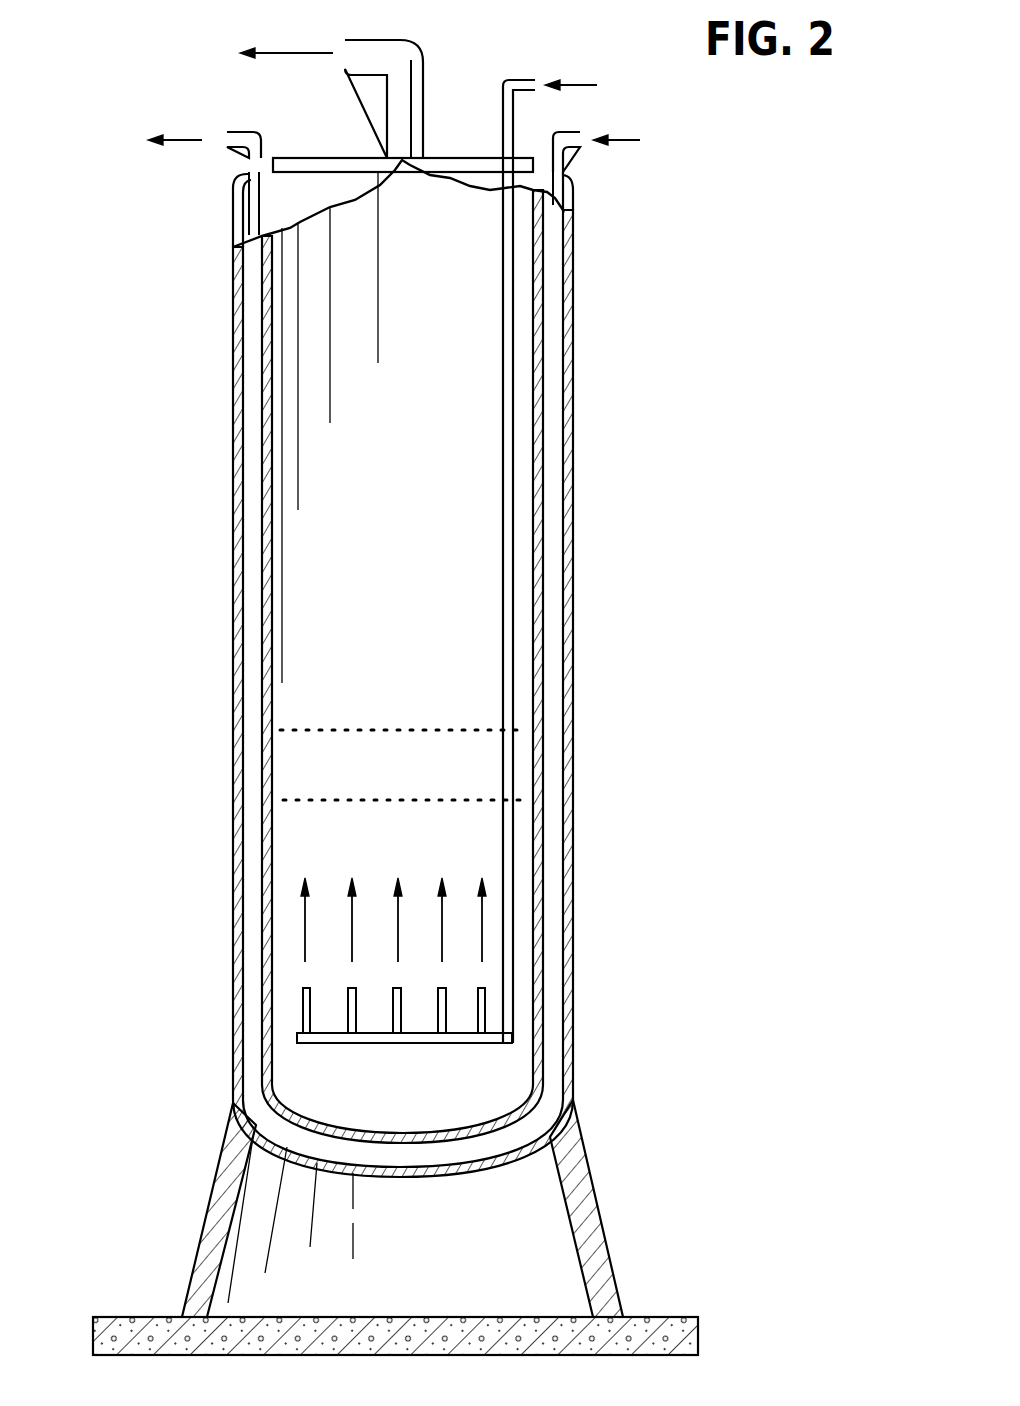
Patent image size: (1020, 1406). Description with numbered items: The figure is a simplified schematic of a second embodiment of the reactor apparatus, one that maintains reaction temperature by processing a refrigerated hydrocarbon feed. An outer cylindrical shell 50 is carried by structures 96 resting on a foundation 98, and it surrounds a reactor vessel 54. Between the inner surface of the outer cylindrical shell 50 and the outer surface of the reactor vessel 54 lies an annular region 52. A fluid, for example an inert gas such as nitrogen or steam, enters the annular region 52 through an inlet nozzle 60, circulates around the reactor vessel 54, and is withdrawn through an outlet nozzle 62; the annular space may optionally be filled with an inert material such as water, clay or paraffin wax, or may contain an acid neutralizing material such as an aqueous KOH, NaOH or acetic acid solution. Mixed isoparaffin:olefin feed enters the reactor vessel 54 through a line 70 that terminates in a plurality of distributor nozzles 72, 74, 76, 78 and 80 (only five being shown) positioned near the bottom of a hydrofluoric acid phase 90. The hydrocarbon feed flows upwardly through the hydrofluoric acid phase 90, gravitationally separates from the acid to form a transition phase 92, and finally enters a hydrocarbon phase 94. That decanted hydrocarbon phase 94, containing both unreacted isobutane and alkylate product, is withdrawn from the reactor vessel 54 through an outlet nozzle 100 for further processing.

The outer cylindrical shell 50 is at (230, 575).
The annular region 52 is at (248, 670).
The reactor vessel 54 is at (262, 770).
The inlet nozzle 60 is at (563, 133).
The outlet nozzle 62 is at (245, 132).
The line 70 is at (520, 80).
The distributor nozzle 72 is at (303, 1016).
The distributor nozzle 74 is at (348, 1016).
The distributor nozzle 76 is at (393, 1016).
The distributor nozzle 78 is at (438, 1016).
The distributor nozzle 80 is at (478, 1016).
The hydrofluoric acid phase 90 is at (422, 852).
The transition phase 92 is at (422, 780).
The hydrocarbon phase 94 is at (422, 710).
The structures 96 is at (207, 1198).
The foundation 98 is at (148, 1313).
The outlet nozzle 100 is at (377, 38).